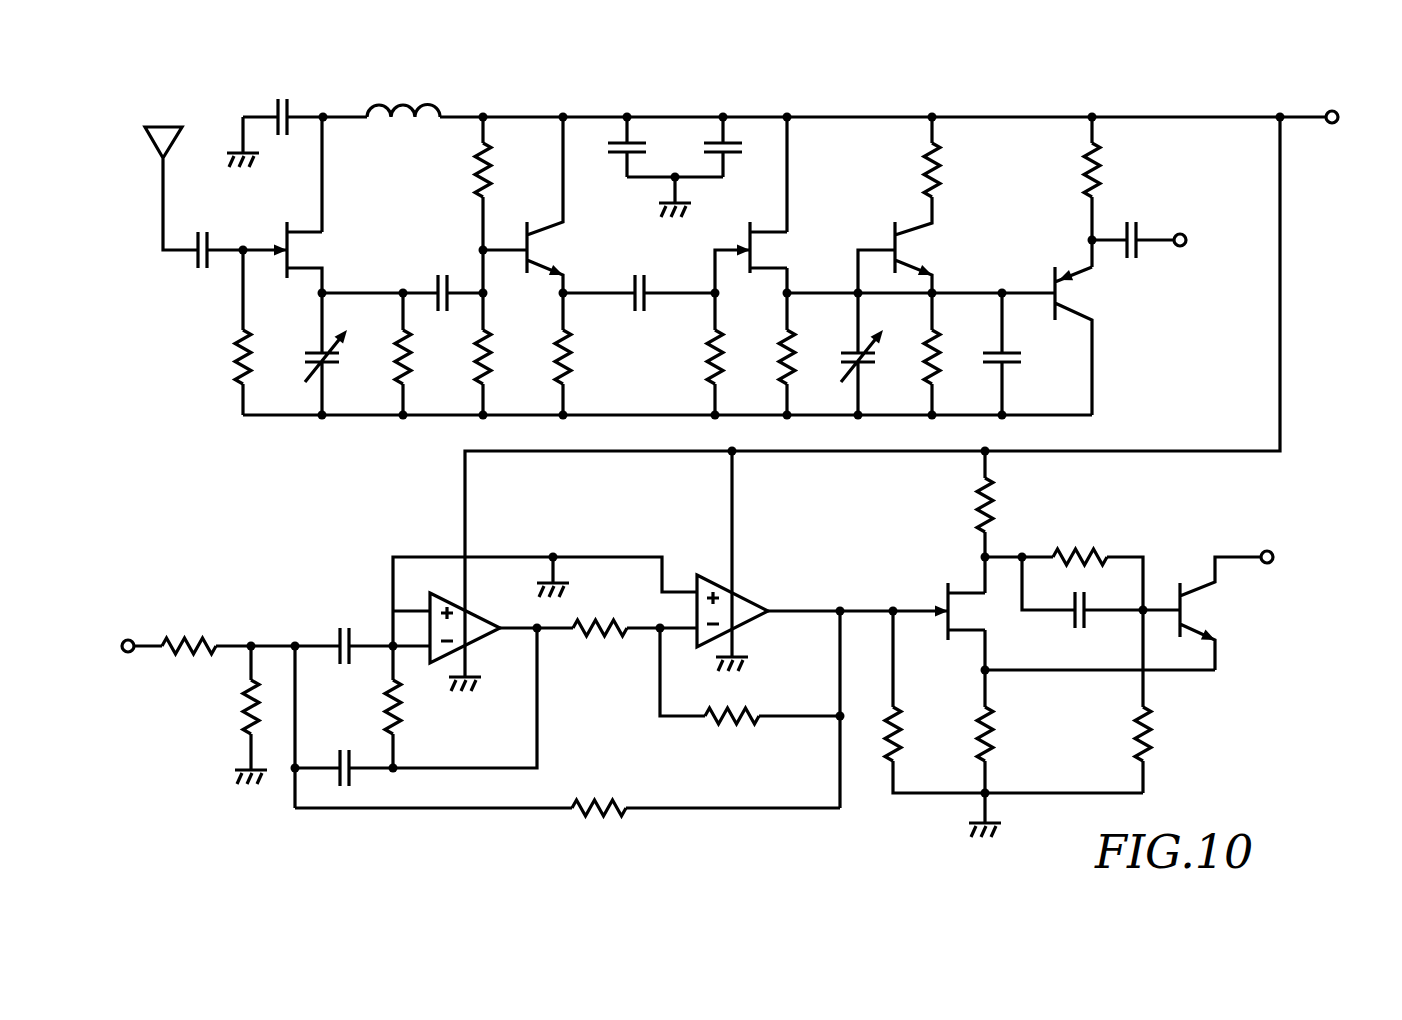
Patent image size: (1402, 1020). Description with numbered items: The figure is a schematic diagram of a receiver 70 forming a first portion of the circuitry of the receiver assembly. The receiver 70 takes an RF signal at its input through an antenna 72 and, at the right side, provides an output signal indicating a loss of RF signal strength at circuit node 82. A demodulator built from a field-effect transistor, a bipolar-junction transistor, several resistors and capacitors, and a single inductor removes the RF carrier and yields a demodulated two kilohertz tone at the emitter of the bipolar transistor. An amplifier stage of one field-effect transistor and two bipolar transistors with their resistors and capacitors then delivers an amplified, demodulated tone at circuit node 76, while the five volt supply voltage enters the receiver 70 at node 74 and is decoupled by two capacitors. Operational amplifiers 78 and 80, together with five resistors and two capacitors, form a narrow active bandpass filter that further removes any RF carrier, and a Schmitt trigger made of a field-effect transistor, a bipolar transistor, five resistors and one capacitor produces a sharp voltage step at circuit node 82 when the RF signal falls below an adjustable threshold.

The receiver 70 is at (184, 97).
The antenna 72 is at (155, 133).
The node 74 is at (1340, 123).
The circuit node 76 is at (1186, 240).
The operational amplifier 78 is at (478, 634).
The operational amplifier 80 is at (752, 618).
The circuit node 82 is at (1273, 555).